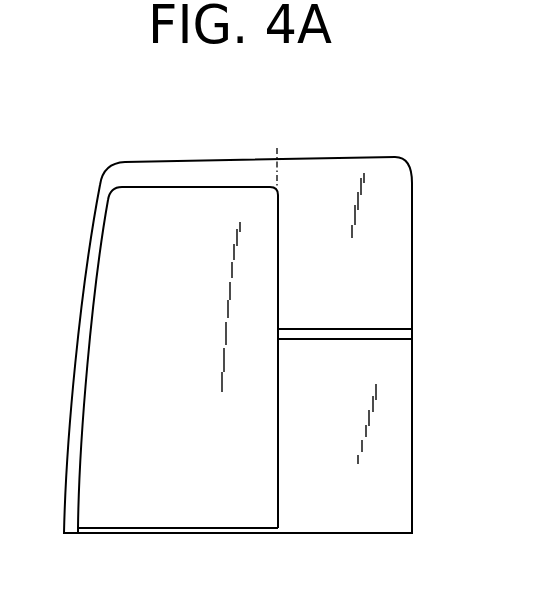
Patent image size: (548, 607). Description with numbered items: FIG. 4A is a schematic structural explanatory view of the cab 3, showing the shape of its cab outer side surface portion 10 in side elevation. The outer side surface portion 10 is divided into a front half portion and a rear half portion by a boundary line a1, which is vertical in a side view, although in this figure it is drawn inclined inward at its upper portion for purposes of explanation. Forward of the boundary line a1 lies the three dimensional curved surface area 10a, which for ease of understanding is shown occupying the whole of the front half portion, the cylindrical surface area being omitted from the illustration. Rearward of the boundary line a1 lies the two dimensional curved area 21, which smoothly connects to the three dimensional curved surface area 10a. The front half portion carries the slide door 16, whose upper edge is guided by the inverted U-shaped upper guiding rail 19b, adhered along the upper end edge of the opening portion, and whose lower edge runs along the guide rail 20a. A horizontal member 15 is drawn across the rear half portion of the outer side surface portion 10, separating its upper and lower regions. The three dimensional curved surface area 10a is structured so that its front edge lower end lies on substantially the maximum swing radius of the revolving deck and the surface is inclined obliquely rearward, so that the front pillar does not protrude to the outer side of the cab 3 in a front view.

The cab 3 is at (166, 150).
The upper guiding rail 19b is at (213, 187).
The boundary line a1 is at (281, 153).
The three dimensional curved surface area 10a is at (252, 228).
The slide door 16 is at (174, 360).
The belt line bar 15 is at (352, 328).
The two dimensional curved area 21 is at (395, 375).
The cab outer side surface portion 10 is at (345, 418).
The lower frame edge 20a is at (195, 534).